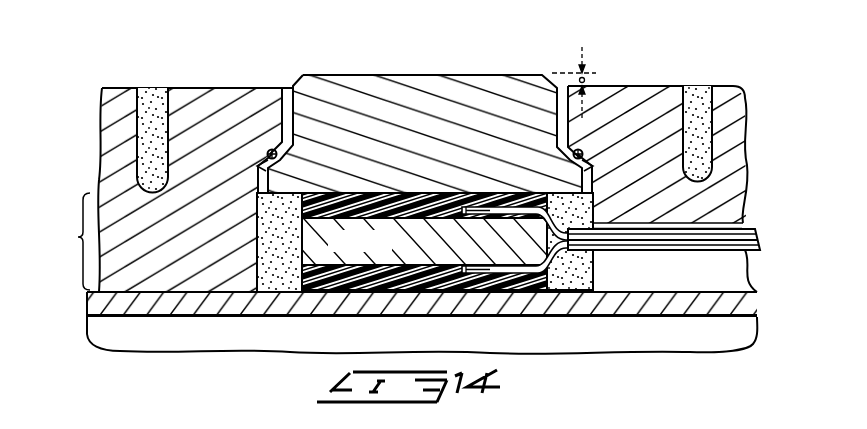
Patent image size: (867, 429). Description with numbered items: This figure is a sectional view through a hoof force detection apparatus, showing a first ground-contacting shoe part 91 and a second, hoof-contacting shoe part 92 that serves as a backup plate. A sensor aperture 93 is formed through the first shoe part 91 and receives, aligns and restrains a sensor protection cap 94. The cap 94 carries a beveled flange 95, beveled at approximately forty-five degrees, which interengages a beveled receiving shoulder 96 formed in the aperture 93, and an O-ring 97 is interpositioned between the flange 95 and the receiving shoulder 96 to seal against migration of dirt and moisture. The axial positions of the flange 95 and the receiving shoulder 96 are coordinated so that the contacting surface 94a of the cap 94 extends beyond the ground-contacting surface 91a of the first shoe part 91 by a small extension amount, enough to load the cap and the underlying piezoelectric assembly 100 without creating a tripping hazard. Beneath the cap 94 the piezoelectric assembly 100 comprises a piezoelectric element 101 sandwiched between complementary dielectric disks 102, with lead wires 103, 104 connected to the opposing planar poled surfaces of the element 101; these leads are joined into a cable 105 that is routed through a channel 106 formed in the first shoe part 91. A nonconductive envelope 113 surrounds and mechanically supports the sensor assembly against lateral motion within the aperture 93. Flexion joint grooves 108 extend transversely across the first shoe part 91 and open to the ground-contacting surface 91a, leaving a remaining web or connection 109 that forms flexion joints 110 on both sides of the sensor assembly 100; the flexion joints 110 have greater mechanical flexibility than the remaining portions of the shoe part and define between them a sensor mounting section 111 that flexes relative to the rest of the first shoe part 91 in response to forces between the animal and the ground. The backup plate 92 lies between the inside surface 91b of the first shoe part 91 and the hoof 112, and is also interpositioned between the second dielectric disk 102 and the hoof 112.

The first ground-contacting shoe part 91 is at (633, 97).
The contacting surface of first shoe part 91a is at (200, 88).
The inside surface of first shoe part 91b is at (192, 292).
The second or hoof-contacting shoe part 92 is at (103, 303).
The sensor aperture 93 is at (293, 84).
The sensor protection cap 94 is at (528, 90).
The contacting surface of sensor cap 94a is at (383, 75).
The beveled flange 95 is at (277, 158).
The beveled receiving shoulder 96 is at (270, 152).
The O-ring 97 is at (262, 163).
The piezoelectric assembly 100 is at (598, 213).
The piezoelectric element 101 is at (424, 241).
The dielectric disk 102 is at (423, 203).
The lead wire 103 is at (488, 215).
The lead wire 104 is at (540, 268).
The cable 105 is at (738, 240).
The channel 106 is at (742, 199).
The flexion joint groove 108 is at (153, 84).
The web or connection 109 is at (66, 241).
The flexion joint 110 is at (168, 58).
The sensor mounting section 111 is at (594, 36).
The hoof 112 is at (422, 335).
The nonconductive envelope 113 is at (260, 272).